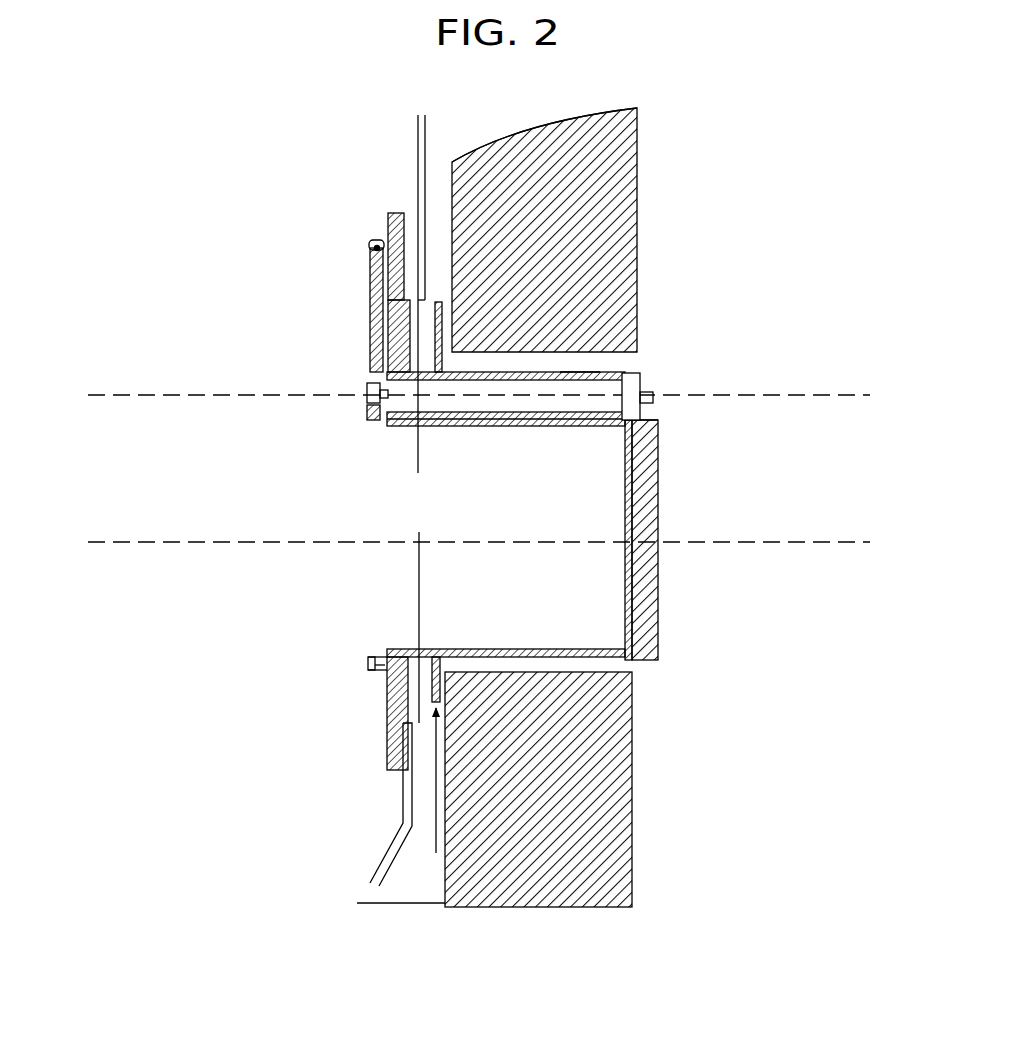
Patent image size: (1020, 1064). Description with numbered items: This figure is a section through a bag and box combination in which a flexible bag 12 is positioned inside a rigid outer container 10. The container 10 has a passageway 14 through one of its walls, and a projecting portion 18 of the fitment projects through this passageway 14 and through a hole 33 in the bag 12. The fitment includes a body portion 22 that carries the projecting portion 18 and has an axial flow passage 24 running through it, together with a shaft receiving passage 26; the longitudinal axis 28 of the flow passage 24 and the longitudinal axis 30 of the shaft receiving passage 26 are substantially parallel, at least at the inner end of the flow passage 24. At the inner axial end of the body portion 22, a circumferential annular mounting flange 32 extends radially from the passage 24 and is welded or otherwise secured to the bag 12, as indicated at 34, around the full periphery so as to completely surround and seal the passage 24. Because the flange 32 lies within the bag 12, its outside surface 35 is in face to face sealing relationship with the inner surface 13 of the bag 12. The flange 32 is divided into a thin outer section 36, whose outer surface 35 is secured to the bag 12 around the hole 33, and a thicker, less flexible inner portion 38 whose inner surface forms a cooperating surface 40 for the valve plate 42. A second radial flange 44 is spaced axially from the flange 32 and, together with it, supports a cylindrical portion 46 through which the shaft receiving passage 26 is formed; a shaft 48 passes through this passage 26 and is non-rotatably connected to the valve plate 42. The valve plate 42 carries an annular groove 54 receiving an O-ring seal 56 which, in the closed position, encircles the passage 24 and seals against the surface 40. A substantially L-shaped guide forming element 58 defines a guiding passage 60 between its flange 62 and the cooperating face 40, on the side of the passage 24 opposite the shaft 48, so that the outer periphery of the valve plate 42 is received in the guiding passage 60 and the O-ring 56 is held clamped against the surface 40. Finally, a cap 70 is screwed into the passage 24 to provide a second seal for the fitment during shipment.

The rigid outer container 10 is at (640, 197).
The flexible bag 12 is at (427, 130).
The inner surface of the bag liner 13 is at (412, 156).
The passageway 14 is at (638, 361).
The projecting portion 18 is at (610, 784).
The body portion 22 is at (625, 741).
The flow passage 24 is at (520, 564).
The shaft receiving passage 26 is at (658, 428).
The longitudinal axis of the flow passage 28 is at (479, 522).
The longitudinal axis of the shaft receiving passage 30 is at (770, 405).
The mounting flange 32 is at (385, 742).
The hole in the bag liner 33 is at (419, 604).
The weld 34 is at (403, 810).
The outside surface of the flange 35 is at (407, 260).
The thin outer section 36 is at (388, 280).
The thicker inner portion 38 is at (400, 340).
The cooperating surface 40 is at (223, 418).
The valve plate 42 is at (370, 310).
The second radial flange 44 is at (436, 853).
The cylindrical portion 46 is at (712, 333).
The shaft 48 is at (643, 385).
The annular groove 54 is at (369, 247).
The O-ring seal 56 is at (375, 247).
The L-shaped guide forming element 58 is at (368, 660).
The guiding passage 60 is at (222, 692).
The flange on the L-shaped element 62 is at (372, 660).
The cap 70 is at (744, 546).